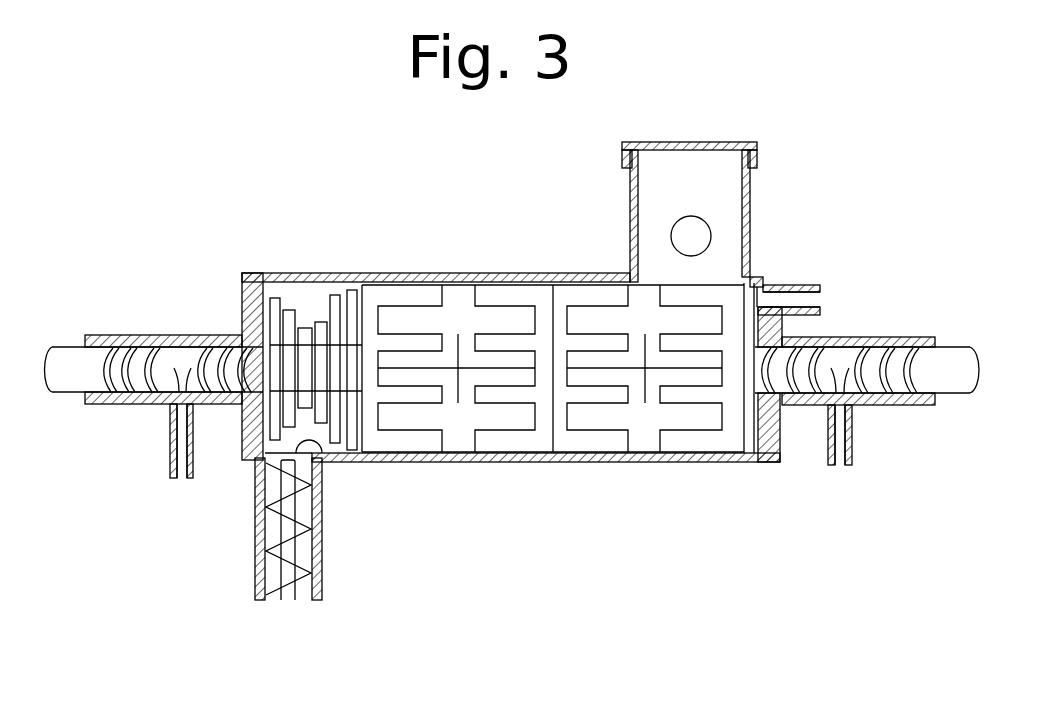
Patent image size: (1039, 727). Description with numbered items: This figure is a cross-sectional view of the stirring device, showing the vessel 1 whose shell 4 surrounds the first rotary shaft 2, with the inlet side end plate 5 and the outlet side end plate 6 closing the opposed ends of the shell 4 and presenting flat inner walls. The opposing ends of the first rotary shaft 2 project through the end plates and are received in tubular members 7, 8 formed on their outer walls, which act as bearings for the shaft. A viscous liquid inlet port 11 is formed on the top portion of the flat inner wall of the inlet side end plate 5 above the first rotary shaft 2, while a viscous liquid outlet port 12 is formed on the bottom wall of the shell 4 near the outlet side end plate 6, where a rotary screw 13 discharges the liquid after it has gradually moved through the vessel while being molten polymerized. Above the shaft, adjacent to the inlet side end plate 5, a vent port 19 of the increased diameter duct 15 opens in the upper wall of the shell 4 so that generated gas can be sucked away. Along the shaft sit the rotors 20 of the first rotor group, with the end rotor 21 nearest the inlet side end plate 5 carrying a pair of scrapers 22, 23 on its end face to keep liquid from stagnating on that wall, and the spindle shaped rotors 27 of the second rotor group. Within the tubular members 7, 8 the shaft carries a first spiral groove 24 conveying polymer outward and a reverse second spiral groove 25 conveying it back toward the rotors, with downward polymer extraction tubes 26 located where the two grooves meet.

The vessel 1 is at (254, 262).
The first rotary shaft 2 is at (972, 417).
The shell 4 is at (478, 275).
The inlet side end plate 5 is at (778, 428).
The outlet side end plate 6 is at (245, 295).
The tubular member 7 is at (870, 340).
The tubular member 8 is at (130, 337).
The viscous liquid inlet port 11 is at (766, 300).
The viscous liquid outlet port 12 is at (322, 456).
The rotary screw 13 is at (262, 540).
The increased diameter duct 15 is at (752, 198).
The vent port 19 is at (670, 273).
The rotor 20 is at (587, 448).
The end rotor 21 is at (705, 448).
The scraper 22 is at (777, 325).
The scraper 23 is at (748, 432).
The first spiral groove 24 is at (224, 406).
The second spiral groove 25 is at (130, 404).
The polymer extraction tube 26 is at (170, 455).
The rotor 27 is at (324, 325).